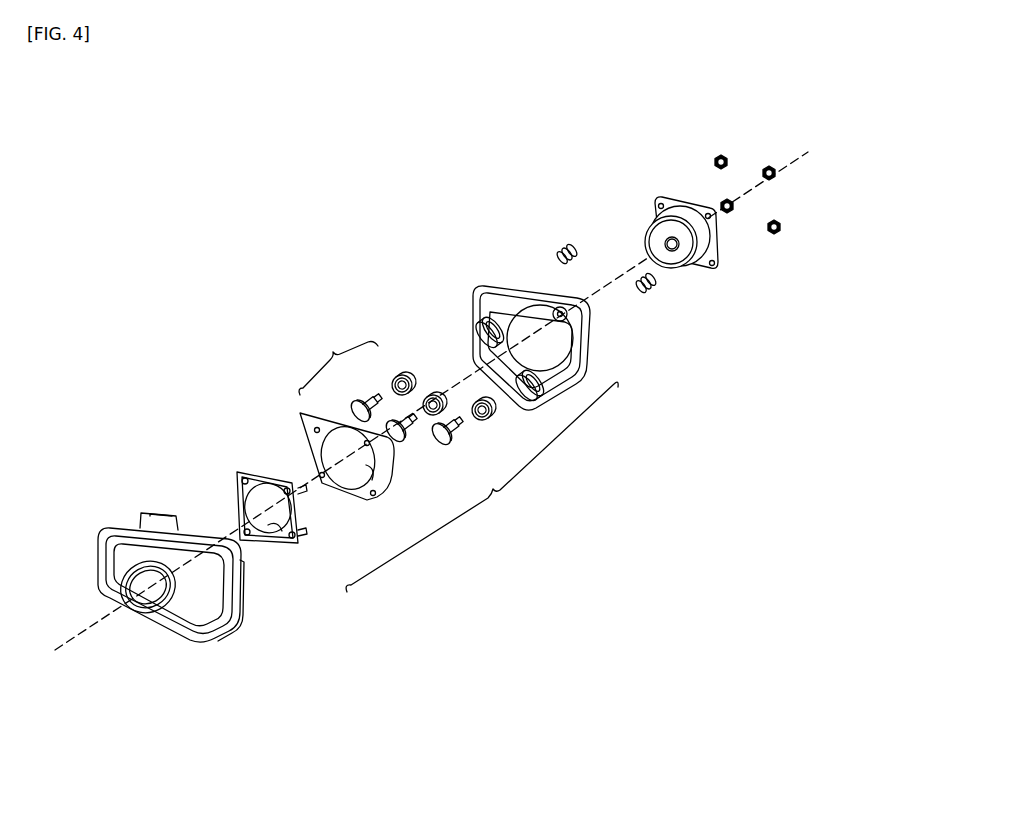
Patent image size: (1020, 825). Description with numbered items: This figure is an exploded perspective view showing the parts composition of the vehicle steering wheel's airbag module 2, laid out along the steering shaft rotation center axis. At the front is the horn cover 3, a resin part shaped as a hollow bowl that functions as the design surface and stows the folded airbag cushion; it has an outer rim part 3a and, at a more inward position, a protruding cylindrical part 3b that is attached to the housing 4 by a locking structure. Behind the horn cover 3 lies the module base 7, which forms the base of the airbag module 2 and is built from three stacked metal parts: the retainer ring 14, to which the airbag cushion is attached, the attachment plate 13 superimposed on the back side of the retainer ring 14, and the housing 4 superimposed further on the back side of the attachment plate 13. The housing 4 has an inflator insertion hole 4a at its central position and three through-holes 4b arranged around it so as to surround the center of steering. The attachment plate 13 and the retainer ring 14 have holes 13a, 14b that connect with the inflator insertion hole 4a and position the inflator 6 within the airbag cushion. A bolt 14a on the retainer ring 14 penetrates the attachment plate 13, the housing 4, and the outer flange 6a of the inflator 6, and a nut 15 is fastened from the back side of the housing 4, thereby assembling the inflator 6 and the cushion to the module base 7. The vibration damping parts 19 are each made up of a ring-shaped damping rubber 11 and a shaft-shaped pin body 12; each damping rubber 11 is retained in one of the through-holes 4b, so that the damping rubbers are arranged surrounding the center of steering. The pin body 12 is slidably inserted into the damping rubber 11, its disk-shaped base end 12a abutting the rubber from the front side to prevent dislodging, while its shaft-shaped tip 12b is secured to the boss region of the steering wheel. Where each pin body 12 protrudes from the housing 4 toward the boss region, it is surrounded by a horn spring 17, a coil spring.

The airbag module 2 is at (362, 622).
The horn cover 3 is at (192, 559).
The outer rim part 3a is at (126, 527).
The cylindrical part 3b is at (238, 594).
The housing 4 is at (522, 335).
The inflator insertion hole 4a is at (572, 305).
The through-holes 4b is at (501, 320).
The inflator 6 is at (705, 204).
The outer flange 6a is at (718, 262).
The module base 7 is at (482, 487).
The damping rubber 11 is at (396, 377).
The pin body 12 is at (402, 441).
The base end 12a is at (440, 441).
The tip 12b is at (472, 423).
The attachment plate 13 is at (338, 460).
The hole 13a is at (373, 492).
The retainer ring 14 is at (270, 525).
The bolt 14a is at (300, 533).
The hole 14b is at (276, 556).
The nut 15 is at (722, 153).
The horn spring 17 is at (571, 245).
The vibration damping parts 19 is at (338, 365).